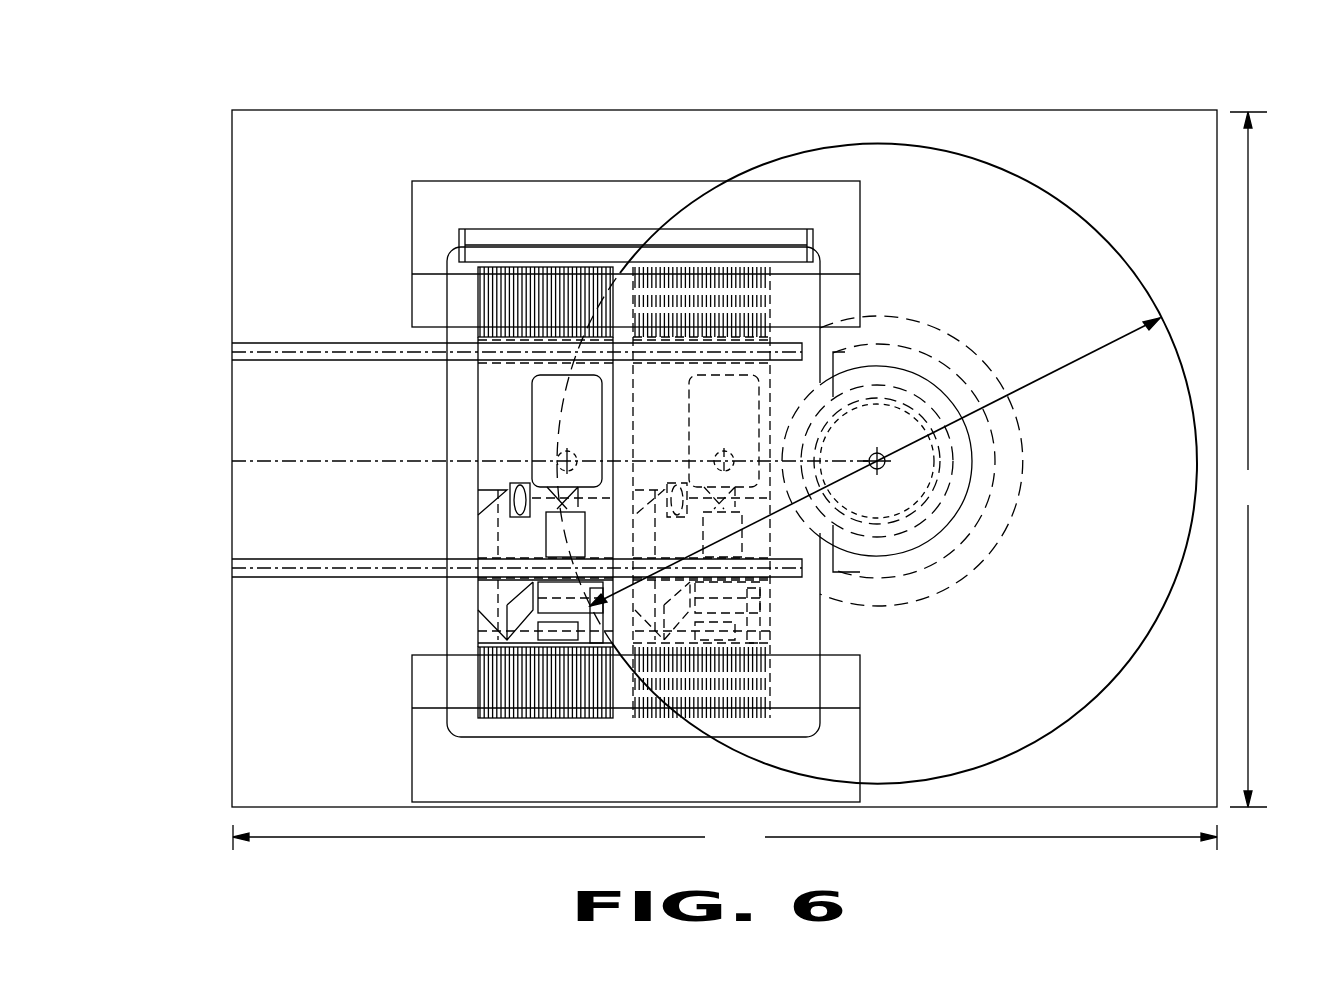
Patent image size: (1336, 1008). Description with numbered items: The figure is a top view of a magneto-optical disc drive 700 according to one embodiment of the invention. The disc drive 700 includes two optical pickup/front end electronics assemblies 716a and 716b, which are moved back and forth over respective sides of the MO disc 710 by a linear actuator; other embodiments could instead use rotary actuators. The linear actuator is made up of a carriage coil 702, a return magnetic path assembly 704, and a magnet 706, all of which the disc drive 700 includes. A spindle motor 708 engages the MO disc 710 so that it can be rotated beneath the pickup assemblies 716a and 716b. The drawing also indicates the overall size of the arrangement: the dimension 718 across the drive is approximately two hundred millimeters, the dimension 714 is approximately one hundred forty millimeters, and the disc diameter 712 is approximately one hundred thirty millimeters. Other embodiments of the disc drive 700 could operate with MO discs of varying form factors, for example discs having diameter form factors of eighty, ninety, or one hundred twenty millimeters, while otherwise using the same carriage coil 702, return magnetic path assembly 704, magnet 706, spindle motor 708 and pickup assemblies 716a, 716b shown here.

The disc drive 700 is at (181, 78).
The carriage coil 702 is at (478, 305).
The return magnetic path assembly 704 is at (435, 181).
The magnet 706 is at (482, 232).
The spindle motor 708 is at (918, 347).
The MO disc 710 is at (1080, 214).
The disc diameter dimension 712 is at (1163, 313).
The drive dimension 714 is at (1249, 459).
The optical pickup/front end electronics assembly 716a is at (478, 477).
The optical pickup/front end electronics assembly 716b is at (633, 528).
The drive dimension 718 is at (725, 838).